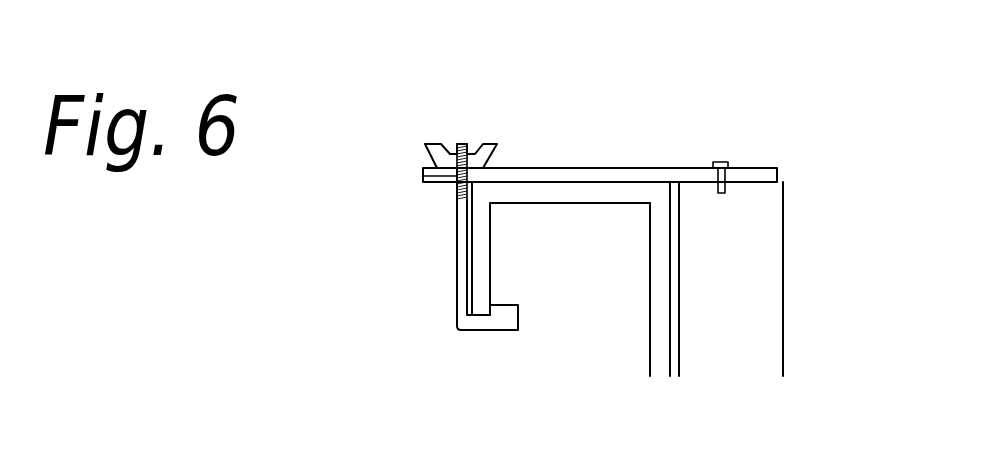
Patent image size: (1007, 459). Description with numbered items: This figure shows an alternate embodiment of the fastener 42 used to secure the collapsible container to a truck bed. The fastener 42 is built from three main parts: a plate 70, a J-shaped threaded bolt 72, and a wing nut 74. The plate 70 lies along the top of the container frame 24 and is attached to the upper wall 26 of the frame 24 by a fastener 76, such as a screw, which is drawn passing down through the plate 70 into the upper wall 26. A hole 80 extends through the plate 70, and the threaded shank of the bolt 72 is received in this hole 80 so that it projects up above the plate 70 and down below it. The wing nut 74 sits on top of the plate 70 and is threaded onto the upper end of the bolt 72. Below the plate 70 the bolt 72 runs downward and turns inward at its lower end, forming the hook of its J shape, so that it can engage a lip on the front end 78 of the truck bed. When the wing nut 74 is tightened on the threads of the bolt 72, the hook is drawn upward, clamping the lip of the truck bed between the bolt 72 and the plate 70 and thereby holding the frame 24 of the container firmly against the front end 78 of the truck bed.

The frame 24 is at (746, 256).
The upper wall 26 is at (782, 181).
The fastener 42 is at (618, 140).
The plate 70 is at (552, 168).
The J-shaped threaded bolt 72 is at (462, 274).
The wing nut 74 is at (433, 143).
The fastener 76 is at (720, 161).
The front end 78 is at (662, 320).
The hole 80 is at (423, 176).